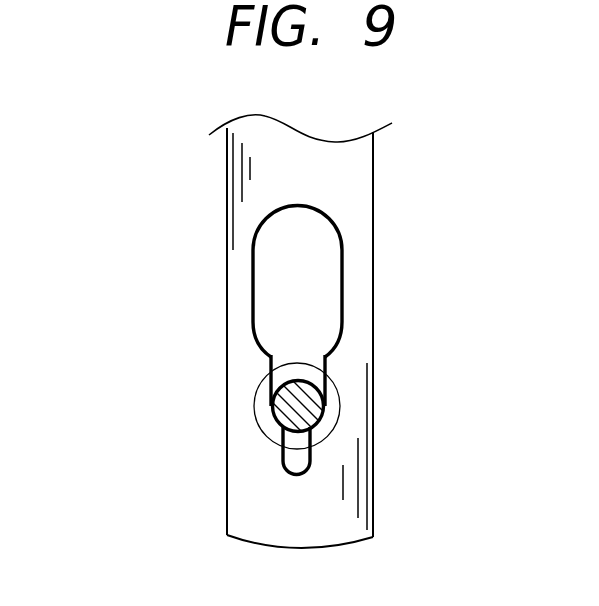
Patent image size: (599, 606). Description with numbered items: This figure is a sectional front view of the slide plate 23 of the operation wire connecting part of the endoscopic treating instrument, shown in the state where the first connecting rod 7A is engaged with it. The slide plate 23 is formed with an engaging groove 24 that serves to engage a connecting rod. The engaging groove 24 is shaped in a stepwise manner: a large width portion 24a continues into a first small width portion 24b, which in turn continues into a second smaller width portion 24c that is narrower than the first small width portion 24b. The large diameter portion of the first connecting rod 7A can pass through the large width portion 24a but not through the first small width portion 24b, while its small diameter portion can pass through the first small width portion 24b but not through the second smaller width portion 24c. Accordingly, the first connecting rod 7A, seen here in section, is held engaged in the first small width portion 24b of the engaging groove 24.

The slide plate 23 is at (357, 204).
The engaging groove 24 is at (242, 282).
The large width portion 24a is at (338, 296).
The first small width portion 24b is at (298, 363).
The second smaller width portion 24c is at (300, 447).
The first connecting rod 7A is at (258, 385).